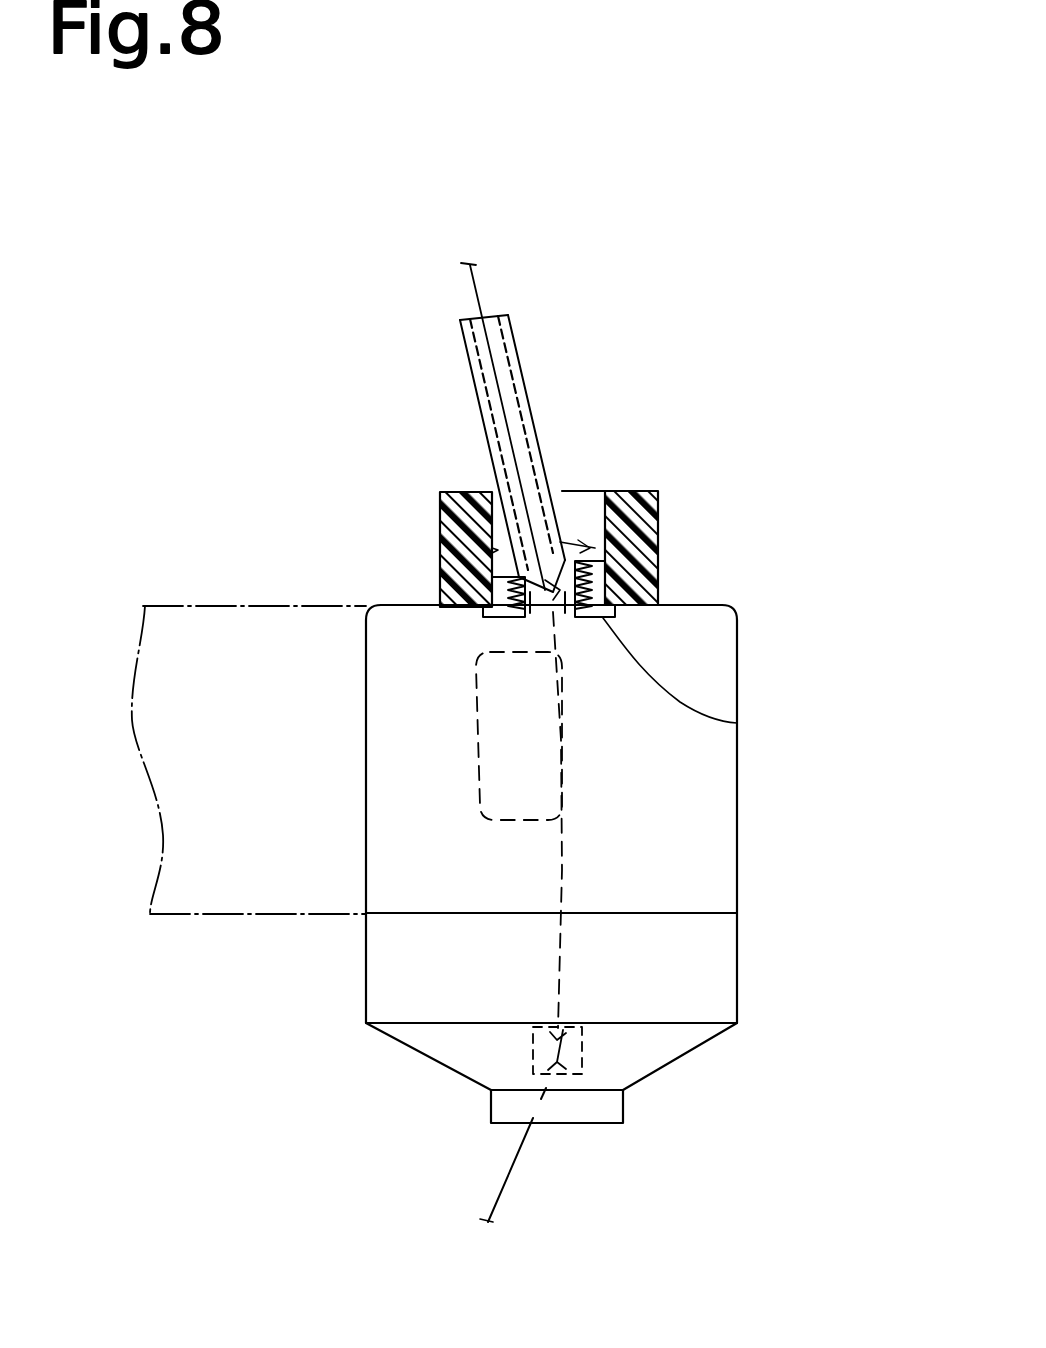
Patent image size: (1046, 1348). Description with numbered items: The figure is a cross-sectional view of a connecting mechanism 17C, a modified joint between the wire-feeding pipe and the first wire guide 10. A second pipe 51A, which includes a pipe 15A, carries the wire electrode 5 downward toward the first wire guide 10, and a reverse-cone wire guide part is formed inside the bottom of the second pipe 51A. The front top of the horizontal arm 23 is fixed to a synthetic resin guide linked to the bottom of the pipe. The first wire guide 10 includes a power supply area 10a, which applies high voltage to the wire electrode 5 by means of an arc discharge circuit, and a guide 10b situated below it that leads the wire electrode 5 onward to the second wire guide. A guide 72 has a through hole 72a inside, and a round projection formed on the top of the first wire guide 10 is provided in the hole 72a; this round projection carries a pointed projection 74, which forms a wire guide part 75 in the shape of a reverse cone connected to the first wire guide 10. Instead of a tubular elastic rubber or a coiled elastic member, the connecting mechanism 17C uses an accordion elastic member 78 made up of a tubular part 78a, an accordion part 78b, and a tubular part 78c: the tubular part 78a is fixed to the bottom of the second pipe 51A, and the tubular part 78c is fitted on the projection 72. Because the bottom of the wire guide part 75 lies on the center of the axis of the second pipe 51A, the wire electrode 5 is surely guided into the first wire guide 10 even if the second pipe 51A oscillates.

The wire electrode 5 is at (510, 1176).
The first wire guide 10 is at (738, 806).
The power supply area 10a is at (475, 737).
The guide 10b is at (535, 1050).
The conduit 15A is at (515, 352).
The connecting mechanism 17C is at (679, 436).
The horizontal arm 23 is at (167, 606).
The second pipe 51A is at (617, 427).
The guide 72 is at (440, 492).
The through hole 72a is at (498, 550).
The pointed projection 74 is at (512, 590).
The wire guide part 75 is at (565, 612).
The accordion elastic member 78 is at (659, 524).
The tubular part 78a is at (560, 542).
The accordion part 78b is at (659, 584).
The tubular part 78c is at (737, 723).